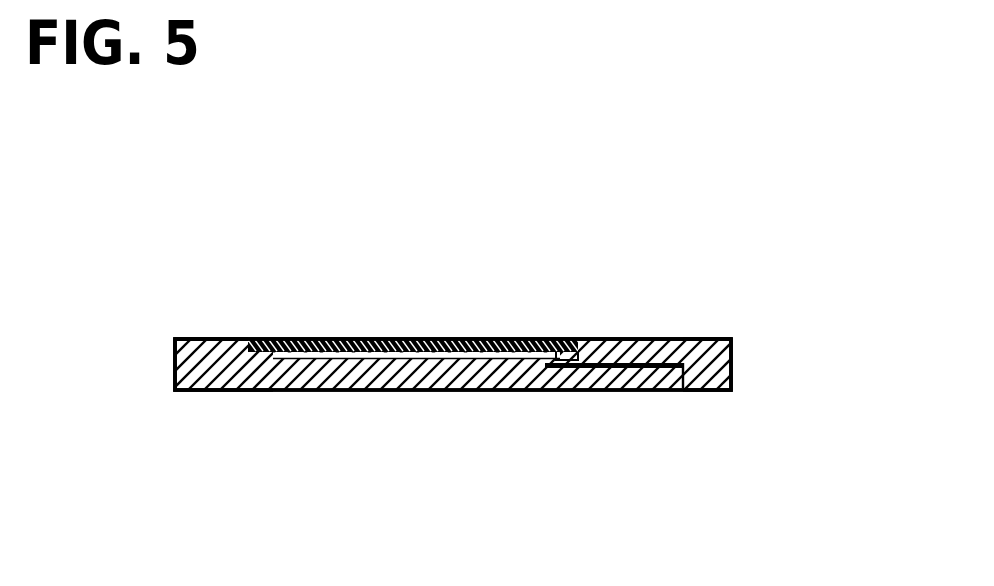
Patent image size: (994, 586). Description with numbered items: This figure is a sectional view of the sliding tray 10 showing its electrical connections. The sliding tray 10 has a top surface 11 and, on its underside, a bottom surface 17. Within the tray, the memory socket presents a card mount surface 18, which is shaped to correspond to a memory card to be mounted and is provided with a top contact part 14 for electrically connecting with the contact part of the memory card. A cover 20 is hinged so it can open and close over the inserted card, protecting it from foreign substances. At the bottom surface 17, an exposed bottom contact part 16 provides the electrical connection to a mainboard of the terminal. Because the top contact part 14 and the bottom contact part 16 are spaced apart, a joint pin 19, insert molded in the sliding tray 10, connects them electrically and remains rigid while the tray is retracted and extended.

The sliding tray 10 is at (795, 320).
The top surface 11 is at (222, 338).
The top contact part 14 is at (516, 390).
The bottom contact part 16 is at (697, 390).
The bottom surface 17 is at (299, 390).
The card mount surface 18 is at (404, 390).
The joint pin 19 is at (612, 390).
The cover 20 is at (440, 338).